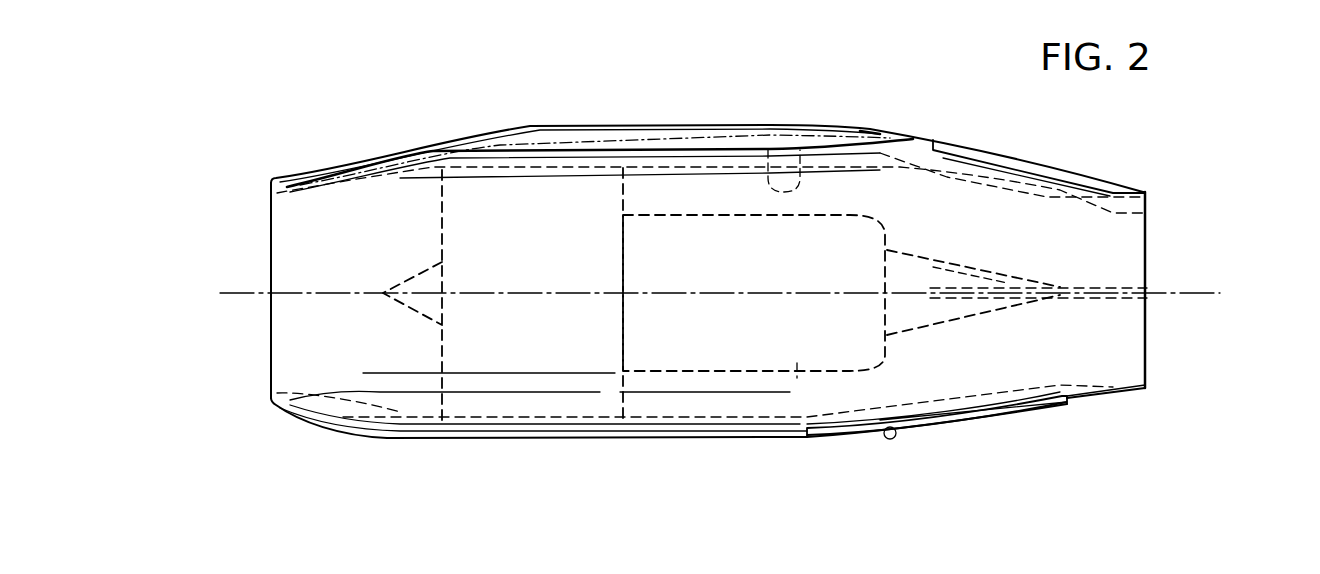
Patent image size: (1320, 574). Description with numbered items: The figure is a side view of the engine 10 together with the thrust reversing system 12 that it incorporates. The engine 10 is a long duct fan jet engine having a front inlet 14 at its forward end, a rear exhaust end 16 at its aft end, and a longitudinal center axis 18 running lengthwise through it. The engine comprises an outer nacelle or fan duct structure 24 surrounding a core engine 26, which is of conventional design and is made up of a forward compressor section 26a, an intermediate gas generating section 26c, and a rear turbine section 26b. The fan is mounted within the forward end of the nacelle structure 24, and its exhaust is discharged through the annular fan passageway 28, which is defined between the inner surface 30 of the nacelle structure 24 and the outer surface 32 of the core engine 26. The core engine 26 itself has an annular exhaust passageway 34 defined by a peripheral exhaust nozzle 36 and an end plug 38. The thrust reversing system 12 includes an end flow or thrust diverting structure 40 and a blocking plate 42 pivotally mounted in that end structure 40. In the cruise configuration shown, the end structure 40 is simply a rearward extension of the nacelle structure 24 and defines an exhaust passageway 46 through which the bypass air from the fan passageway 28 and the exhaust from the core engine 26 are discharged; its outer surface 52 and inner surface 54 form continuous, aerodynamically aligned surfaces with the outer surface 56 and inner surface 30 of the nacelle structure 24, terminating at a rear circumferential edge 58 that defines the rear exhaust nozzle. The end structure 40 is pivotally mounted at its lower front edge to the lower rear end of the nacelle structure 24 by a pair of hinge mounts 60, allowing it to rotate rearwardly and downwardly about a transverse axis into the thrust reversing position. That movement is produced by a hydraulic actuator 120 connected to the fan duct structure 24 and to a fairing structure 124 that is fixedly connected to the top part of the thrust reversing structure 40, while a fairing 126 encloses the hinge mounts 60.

The engine 10 is at (372, 125).
The thrust reversing system 12 is at (1115, 165).
The front inlet 14 is at (262, 242).
The rear exhaust end 16 is at (1165, 241).
The longitudinal center axis 18 is at (1188, 293).
The outer nacelle structure 24 is at (588, 145).
The core engine 26 is at (812, 200).
The forward compressor section 26a is at (477, 390).
The rear turbine section 26b is at (797, 363).
The intermediate gas generating section 26c is at (652, 363).
The annular fan passageway 28 is at (662, 187).
The inner surface 30 is at (797, 205).
The outer surface 32 is at (693, 205).
The annular exhaust passageway 34 is at (937, 263).
The peripheral exhaust nozzle 36 is at (887, 243).
The end plug 38 is at (935, 267).
The end thrust diverting structure 40 is at (1127, 187).
The blocking plate 42 is at (1030, 285).
The exhaust passageway 46 is at (1120, 343).
The outer surface 52 is at (1027, 163).
The inner surface 54 is at (1147, 213).
The outer surface 56 is at (548, 147).
The rear circumferential edge 58 is at (1147, 193).
The hinge mounts 60 is at (893, 439).
The hydraulic actuator 120 is at (570, 125).
The fairing structure 124 is at (873, 130).
The fairing 126 is at (970, 423).